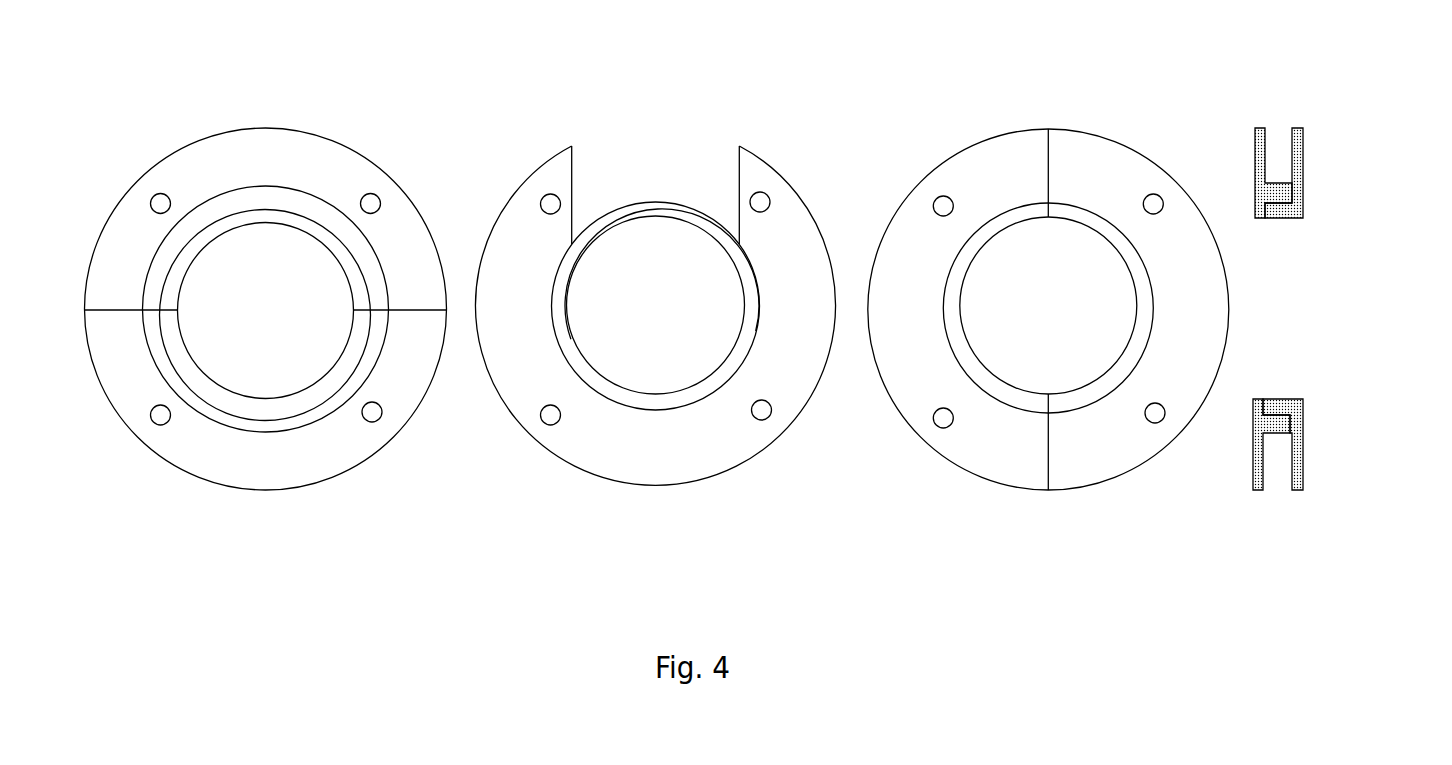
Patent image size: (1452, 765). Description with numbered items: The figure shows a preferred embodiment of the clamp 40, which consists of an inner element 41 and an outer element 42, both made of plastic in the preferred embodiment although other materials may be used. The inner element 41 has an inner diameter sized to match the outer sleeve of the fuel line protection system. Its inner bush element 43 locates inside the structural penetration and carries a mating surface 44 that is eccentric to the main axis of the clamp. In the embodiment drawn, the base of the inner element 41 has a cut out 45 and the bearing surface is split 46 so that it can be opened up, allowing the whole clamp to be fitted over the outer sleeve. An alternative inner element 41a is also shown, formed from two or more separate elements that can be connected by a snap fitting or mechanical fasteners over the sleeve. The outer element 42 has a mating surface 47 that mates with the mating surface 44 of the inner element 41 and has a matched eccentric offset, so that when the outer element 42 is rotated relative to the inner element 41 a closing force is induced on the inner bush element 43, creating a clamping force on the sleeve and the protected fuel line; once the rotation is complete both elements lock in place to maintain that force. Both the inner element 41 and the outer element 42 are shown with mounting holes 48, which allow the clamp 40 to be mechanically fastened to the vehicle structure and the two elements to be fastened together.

The clamp 40 is at (161, 100).
The inner element 41 is at (728, 448).
The inner element 41a is at (1007, 448).
The outer element 42 is at (327, 457).
The inner bush element 43 is at (670, 398).
The mating surface 44 is at (743, 365).
The cut out 45 is at (593, 160).
The split 46 is at (655, 208).
The mating surface 47 is at (308, 217).
The mounting holes 48 is at (945, 197).